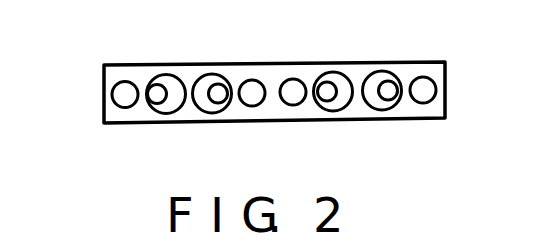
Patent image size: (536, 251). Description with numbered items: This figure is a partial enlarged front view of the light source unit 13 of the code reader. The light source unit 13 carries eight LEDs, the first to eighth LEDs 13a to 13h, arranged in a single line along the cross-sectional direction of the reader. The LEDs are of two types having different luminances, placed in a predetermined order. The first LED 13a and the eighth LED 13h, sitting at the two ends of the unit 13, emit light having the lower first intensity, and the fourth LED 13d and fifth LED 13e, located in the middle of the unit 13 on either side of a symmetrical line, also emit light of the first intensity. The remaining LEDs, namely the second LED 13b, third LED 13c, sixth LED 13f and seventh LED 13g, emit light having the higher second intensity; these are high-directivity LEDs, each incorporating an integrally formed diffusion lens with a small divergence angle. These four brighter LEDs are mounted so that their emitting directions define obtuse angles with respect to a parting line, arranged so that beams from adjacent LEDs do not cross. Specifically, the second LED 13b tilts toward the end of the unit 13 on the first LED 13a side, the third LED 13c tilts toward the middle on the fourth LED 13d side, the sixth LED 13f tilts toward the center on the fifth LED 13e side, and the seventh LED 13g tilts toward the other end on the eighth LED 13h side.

The light source unit 13 is at (389, 124).
The first LED 13a is at (112, 94).
The second LED 13b is at (158, 75).
The third LED 13c is at (202, 74).
The fourth LED 13d is at (250, 80).
The fifth LED 13e is at (290, 77).
The sixth LED 13f is at (332, 72).
The seventh LED 13g is at (388, 73).
The eighth LED 13h is at (436, 90).